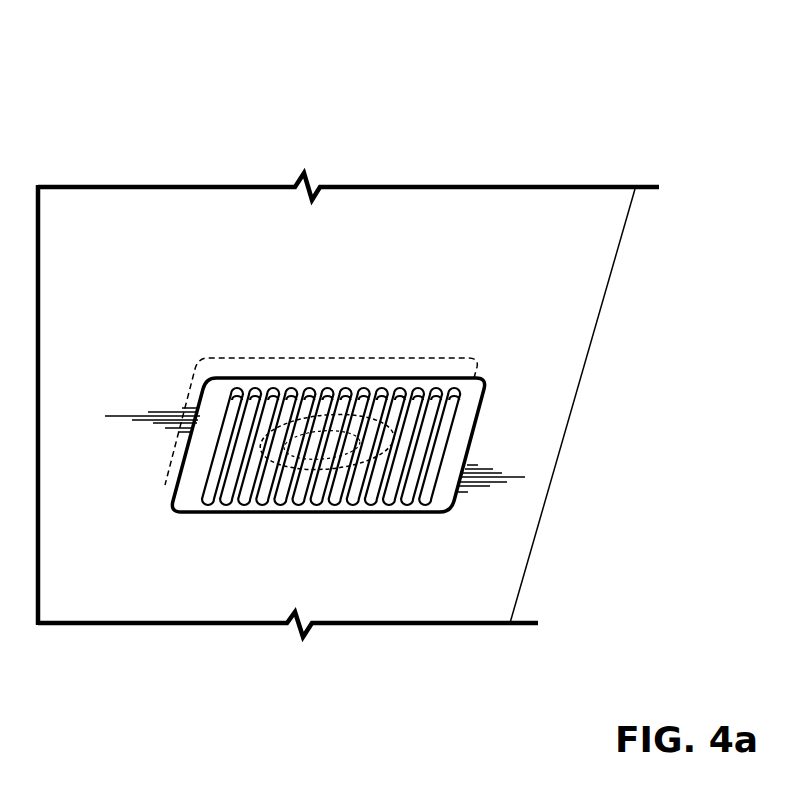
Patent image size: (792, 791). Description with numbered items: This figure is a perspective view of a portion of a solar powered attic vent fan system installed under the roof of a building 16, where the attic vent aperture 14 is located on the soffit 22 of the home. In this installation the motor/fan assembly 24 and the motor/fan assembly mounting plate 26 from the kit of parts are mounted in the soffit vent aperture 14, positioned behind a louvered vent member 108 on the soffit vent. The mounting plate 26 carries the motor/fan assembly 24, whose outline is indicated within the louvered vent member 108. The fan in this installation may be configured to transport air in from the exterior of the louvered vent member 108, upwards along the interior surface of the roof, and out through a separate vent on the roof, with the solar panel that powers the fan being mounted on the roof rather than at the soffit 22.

The building 16 is at (197, 74).
The soffit 22 is at (542, 259).
The vent aperture 14 is at (315, 410).
The louvered vent member 108 is at (328, 380).
The motor/fan assembly mounting plate 26 is at (398, 357).
The motor/fan assembly 24 is at (362, 470).